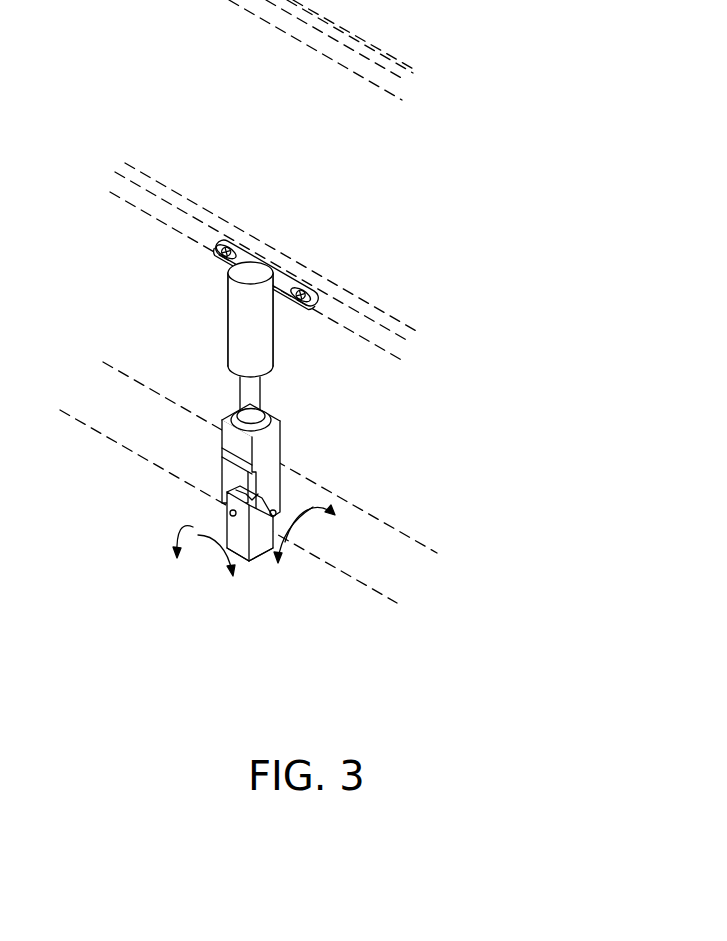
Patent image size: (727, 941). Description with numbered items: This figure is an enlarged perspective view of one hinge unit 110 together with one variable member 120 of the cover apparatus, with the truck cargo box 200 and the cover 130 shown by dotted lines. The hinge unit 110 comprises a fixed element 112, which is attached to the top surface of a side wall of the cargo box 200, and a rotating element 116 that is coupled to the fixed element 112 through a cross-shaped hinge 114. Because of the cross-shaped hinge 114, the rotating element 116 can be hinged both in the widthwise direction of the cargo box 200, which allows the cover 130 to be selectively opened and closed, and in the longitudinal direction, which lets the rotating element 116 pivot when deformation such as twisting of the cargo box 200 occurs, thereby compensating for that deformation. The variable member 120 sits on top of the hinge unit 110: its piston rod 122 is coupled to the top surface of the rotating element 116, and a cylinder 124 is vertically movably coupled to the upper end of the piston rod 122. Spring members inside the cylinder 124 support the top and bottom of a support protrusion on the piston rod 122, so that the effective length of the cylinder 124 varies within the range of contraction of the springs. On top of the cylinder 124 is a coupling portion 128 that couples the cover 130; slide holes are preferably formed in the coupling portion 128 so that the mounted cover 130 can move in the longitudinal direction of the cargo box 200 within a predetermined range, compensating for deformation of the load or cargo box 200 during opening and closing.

The hinge unit 110 is at (293, 452).
The fixed element 112 is at (266, 560).
The cross-shaped hinge 114 is at (231, 497).
The rotating element 116 is at (220, 440).
The variable member 120 is at (283, 333).
The piston rod 122 is at (233, 390).
The cylinder 124 is at (228, 283).
The coupling portion 128 is at (238, 240).
The cover 130 is at (388, 316).
The truck cargo box 200 is at (413, 540).